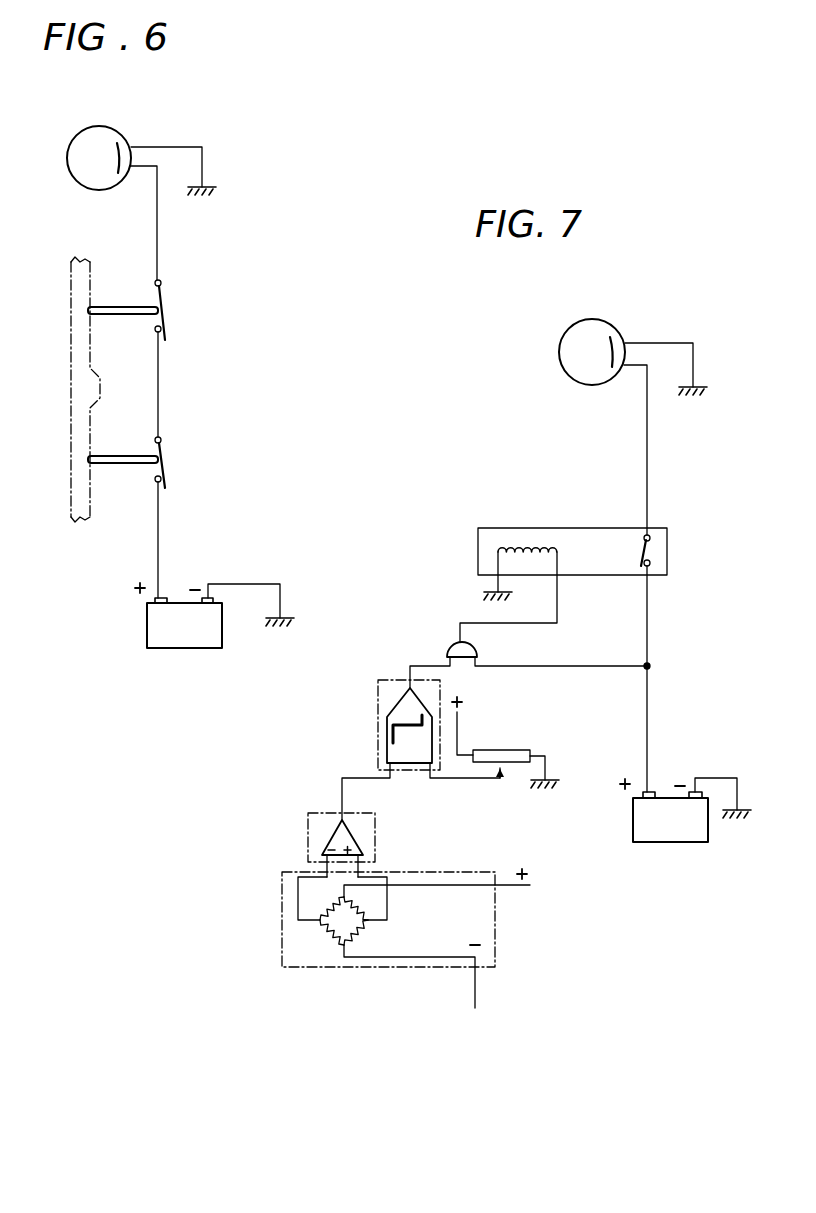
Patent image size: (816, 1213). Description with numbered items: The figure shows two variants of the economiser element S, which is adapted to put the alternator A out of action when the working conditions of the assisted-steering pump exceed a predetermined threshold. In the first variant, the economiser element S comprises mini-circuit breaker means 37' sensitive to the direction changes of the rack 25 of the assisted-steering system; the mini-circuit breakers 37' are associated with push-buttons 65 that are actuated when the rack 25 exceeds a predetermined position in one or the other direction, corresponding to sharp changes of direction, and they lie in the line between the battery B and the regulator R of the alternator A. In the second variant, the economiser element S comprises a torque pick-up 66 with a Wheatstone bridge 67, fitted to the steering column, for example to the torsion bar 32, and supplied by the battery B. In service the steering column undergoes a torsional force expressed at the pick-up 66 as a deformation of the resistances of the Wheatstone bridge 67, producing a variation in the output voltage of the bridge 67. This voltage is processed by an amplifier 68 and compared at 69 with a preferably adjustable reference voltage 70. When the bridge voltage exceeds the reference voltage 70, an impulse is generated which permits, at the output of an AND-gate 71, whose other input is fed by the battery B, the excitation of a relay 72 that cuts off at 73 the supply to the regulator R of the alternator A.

In FIG. 6, the alternator A is at (85, 147).
In FIG. 7, the alternator A is at (577, 333).
In FIG. 6, the regulator R is at (122, 145).
In FIG. 7, the regulator R is at (618, 340).
In FIG. 6, the rack 25 is at (72, 390).
In FIG. 6, the push-buttons 65 is at (119, 310).
In FIG. 6, the mini-circuit breaker means 37' is at (185, 439).
In FIG. 6, the economiser element S is at (171, 331).
In FIG. 7, the economiser element S is at (370, 973).
In FIG. 6, the battery B is at (214, 615).
In FIG. 7, the battery B is at (685, 810).
In FIG. 7, the relay 72 is at (518, 547).
In FIG. 7, the relay cut-off contact 73 is at (642, 548).
In FIG. 7, the AND-gate 71 is at (452, 647).
In FIG. 7, the comparator 69 is at (378, 716).
In FIG. 7, the reference voltage 70 is at (493, 752).
In FIG. 7, the amplifier 68 is at (308, 825).
In FIG. 7, the torque pick-up 66 is at (495, 950).
In FIG. 7, the Wheatstone bridge 67 is at (371, 932).
In FIG. 7, the torsion bar 32 is at (430, 973).